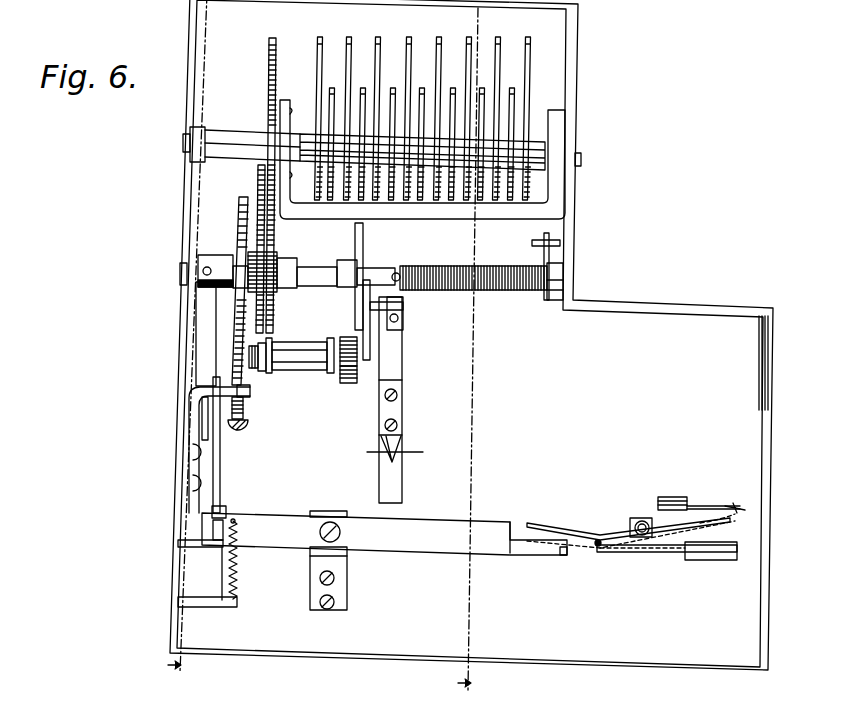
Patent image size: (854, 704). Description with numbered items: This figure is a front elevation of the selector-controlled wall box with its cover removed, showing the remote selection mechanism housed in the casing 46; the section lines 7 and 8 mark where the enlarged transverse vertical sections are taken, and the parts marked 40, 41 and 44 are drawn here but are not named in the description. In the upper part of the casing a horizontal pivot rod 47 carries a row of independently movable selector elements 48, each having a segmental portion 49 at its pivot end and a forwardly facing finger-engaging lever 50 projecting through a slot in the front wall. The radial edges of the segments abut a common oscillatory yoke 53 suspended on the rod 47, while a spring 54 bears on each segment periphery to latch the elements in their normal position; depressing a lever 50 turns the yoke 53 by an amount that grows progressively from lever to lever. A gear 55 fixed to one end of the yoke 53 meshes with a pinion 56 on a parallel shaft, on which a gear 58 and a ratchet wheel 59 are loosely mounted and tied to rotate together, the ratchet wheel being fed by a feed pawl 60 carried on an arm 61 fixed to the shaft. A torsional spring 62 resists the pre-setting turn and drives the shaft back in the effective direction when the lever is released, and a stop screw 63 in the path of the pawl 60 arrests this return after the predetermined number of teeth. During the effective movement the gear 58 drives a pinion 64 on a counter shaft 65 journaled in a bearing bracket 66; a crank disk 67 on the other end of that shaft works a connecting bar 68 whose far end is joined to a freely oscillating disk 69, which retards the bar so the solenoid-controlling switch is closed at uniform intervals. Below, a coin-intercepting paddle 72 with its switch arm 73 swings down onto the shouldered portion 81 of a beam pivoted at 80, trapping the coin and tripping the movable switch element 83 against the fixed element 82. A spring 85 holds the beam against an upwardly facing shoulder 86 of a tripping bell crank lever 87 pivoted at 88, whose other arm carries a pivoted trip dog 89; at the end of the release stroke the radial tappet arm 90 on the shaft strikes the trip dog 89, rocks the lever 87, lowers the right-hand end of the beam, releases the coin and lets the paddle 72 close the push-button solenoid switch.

The section line 7- 7 is at (475, 351).
The section line 8- 8 is at (187, 347).
The link bar 40 is at (405, 306).
The vertical lever arm 41 is at (402, 371).
The stop pin 44 is at (742, 508).
The wall box or casing 46 is at (578, 94).
The horizontal shaft or pivot rod 47 is at (581, 160).
The selector elements 48 is at (517, 207).
The segmental portion 49 is at (384, 534).
The finger-engaging lever 50 is at (380, 46).
The oscillatory bar or yoke 53 is at (422, 215).
The spring 54 is at (318, 279).
The gear 55 is at (277, 65).
The pinion 56 is at (280, 257).
The gear 58 is at (258, 172).
The ratchet wheel 59 is at (242, 206).
The feed pawl 60 is at (258, 345).
The arm 61 is at (226, 282).
The torsional spring 62 is at (515, 296).
The stop screw 63 is at (253, 411).
The pinion 64 is at (263, 364).
The counter shaft 65 is at (315, 372).
The bearing bracket 66 is at (338, 344).
The crank disk 67 is at (350, 385).
The connecting link or bar 68 is at (371, 331).
The freely oscillating disk 69 is at (363, 247).
The coin-intercepting paddle 72 is at (558, 528).
The arm 73 is at (695, 523).
The pivot 80 is at (338, 533).
The shouldered portion 81 is at (543, 551).
The fixed switch element 82 is at (610, 553).
The movable switch element 83 is at (597, 545).
The spring 85 is at (237, 575).
The upwardly-facing shoulder 86 is at (213, 523).
The tripping bell crank lever 87 is at (220, 483).
The pivot 88 is at (223, 508).
The pivoted trip dog 89 is at (208, 432).
The radial tappet arm 90 is at (206, 334).